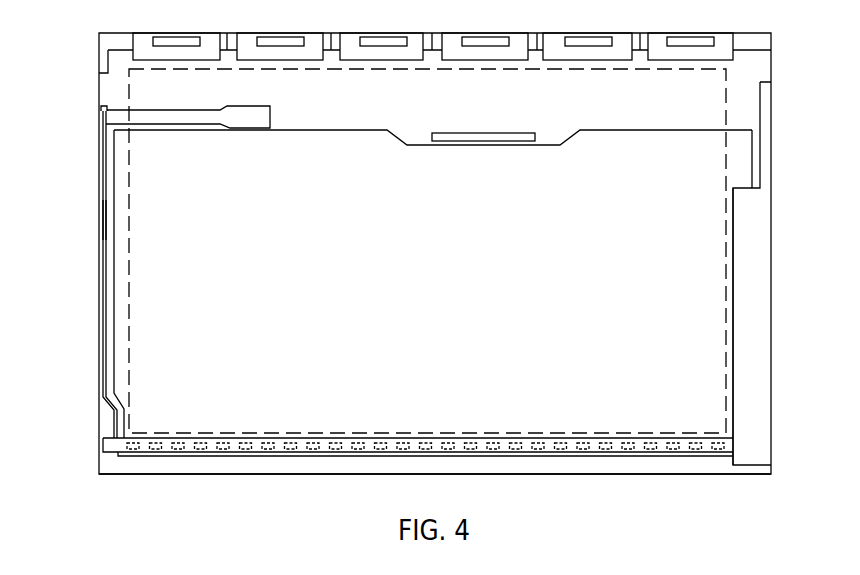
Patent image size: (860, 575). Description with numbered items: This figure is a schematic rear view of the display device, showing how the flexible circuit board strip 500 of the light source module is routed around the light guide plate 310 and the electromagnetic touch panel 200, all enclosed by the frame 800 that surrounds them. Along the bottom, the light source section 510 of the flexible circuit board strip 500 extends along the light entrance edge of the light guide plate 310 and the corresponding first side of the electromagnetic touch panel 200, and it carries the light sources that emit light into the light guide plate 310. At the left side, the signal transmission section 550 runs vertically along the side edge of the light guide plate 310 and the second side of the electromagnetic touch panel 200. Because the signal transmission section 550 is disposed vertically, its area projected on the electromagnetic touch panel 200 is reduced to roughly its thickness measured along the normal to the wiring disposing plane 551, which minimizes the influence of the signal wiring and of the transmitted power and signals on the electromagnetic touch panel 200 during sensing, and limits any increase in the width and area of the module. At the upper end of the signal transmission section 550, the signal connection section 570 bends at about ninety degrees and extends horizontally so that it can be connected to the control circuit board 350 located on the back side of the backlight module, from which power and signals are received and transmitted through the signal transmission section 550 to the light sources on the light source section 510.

The electromagnetic touch panel 200 is at (726, 227).
The light guide plate 310 is at (713, 332).
The control circuit board 350 is at (718, 90).
The flexible circuit board strip 500 is at (51, 464).
The light source section 510 is at (168, 448).
The signal transmission section 550 is at (102, 387).
The wiring disposing plane 551 is at (106, 218).
The signal connection section 570 is at (157, 113).
The frame 800 is at (678, 468).